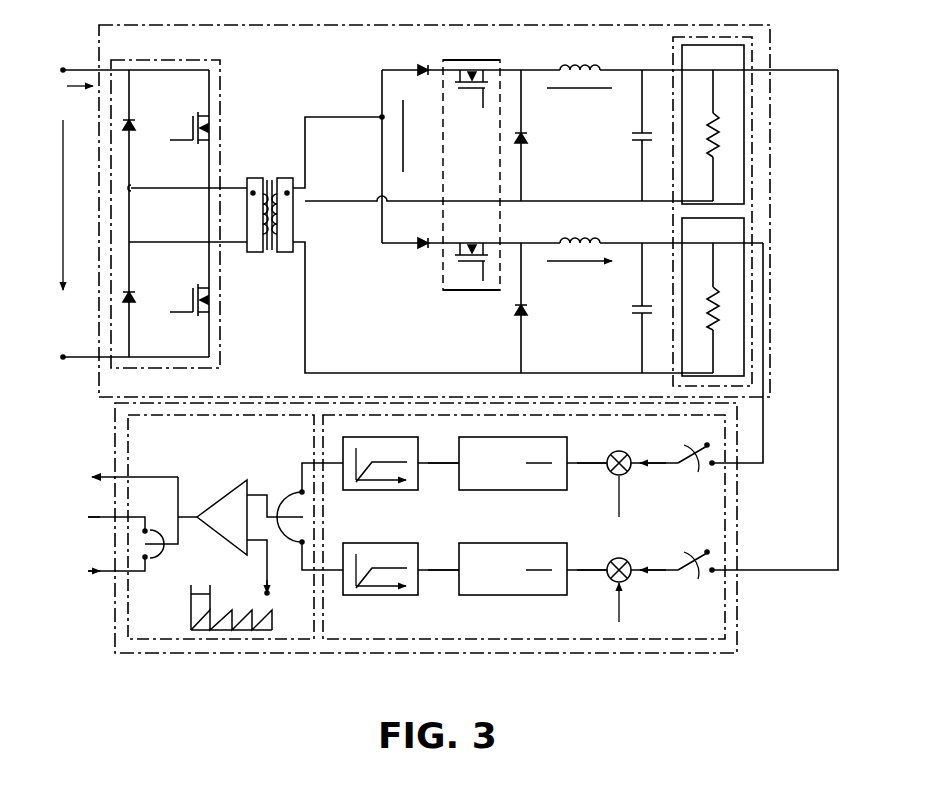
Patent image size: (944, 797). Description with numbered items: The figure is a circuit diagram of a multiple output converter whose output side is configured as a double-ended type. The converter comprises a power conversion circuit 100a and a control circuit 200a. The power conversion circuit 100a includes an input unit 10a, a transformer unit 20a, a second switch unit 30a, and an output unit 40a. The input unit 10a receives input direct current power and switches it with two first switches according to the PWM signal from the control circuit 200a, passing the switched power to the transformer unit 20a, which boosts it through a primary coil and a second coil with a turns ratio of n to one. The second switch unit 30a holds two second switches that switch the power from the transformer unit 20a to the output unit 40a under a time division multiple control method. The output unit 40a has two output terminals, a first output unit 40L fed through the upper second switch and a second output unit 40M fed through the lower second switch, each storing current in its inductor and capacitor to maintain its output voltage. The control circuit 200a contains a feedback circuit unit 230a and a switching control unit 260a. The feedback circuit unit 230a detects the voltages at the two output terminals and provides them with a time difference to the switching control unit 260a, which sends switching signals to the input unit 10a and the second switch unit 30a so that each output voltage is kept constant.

The power conversion circuit 100a is at (99, 43).
The input unit 10a is at (220, 104).
The transformer unit 20a is at (281, 178).
The second switch unit 30a is at (473, 291).
The output unit 40a is at (673, 221).
The first output unit 40L is at (745, 125).
The second output unit 40M is at (745, 298).
The control circuit 200a is at (115, 425).
The feedback circuit unit 230a is at (725, 530).
The switching control unit 260a is at (246, 415).